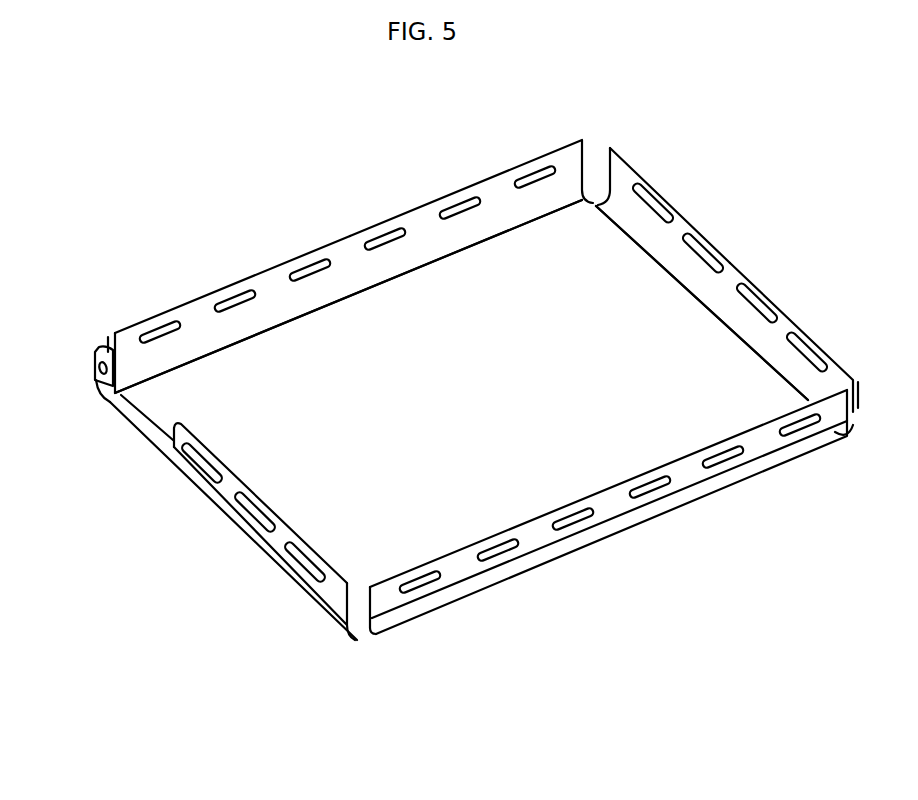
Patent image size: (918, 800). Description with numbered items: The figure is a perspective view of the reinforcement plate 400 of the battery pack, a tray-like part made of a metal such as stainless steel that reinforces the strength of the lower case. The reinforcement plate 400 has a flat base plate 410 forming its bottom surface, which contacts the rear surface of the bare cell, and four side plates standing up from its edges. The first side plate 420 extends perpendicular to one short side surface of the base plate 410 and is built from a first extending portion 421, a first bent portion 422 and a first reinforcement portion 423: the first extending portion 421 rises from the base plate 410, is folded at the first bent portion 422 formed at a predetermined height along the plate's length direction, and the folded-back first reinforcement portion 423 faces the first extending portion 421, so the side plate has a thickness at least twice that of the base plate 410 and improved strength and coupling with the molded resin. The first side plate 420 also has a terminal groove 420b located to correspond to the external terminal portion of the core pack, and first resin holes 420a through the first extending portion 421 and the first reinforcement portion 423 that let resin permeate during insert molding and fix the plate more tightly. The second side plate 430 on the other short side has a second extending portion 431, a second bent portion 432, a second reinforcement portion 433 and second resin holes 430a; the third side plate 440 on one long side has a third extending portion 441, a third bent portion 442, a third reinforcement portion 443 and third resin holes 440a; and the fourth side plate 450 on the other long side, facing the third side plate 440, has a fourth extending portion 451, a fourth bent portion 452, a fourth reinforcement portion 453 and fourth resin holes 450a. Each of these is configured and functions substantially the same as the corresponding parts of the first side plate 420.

The reinforcement plate 400 is at (130, 210).
The base plate 410 is at (396, 528).
The first side plate 420 is at (213, 636).
The first resin hole 420a is at (313, 563).
The terminal groove 420b is at (140, 421).
The first extending portion 421 is at (187, 472).
The first bent portion 422 is at (240, 482).
The first reinforcement portion 423 is at (277, 540).
The second side plate 430 is at (714, 135).
The second resin hole 430a is at (638, 190).
The second extending portion 431 is at (678, 226).
The second bent portion 432 is at (713, 248).
The second reinforcement portion 433 is at (762, 294).
The third side plate 440 is at (236, 184).
The third resin hole 440a is at (457, 207).
The third extending portion 441 is at (272, 285).
The third bent portion 442 is at (338, 247).
The third reinforcement portion 443 is at (386, 222).
The fourth side plate 450 is at (790, 545).
The fourth resin hole 450a is at (725, 462).
The fourth extending portion 451 is at (617, 527).
The fourth bent portion 452 is at (672, 455).
The fourth reinforcement portion 453 is at (538, 537).